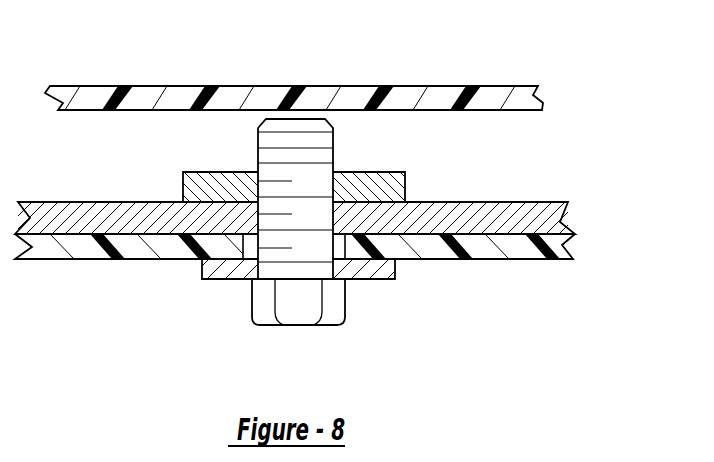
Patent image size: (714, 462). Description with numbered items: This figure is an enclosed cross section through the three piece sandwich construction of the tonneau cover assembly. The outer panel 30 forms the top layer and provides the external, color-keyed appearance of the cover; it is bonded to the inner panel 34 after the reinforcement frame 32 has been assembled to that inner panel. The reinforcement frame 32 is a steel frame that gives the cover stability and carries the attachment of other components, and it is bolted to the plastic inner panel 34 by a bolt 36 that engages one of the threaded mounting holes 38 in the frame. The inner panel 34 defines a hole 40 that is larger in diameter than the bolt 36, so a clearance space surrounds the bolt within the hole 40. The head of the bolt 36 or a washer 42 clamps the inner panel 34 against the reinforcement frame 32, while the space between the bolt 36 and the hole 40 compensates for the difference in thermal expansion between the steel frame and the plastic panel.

The outer panel 30 is at (543, 99).
The reinforcement frame 32 is at (568, 218).
The inner panel 34 is at (573, 240).
The bolt 36 is at (345, 302).
The threaded mounting hole 38 is at (258, 185).
The hole 40 is at (243, 245).
The washer 42 is at (380, 270).